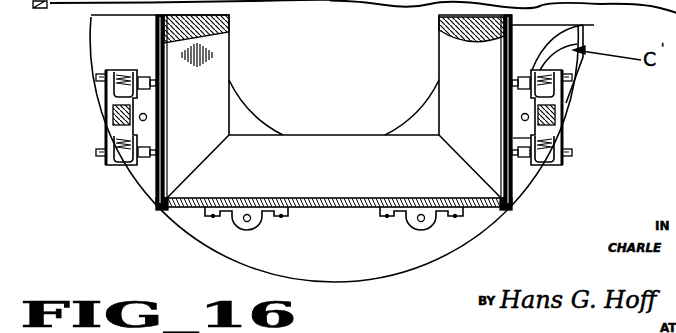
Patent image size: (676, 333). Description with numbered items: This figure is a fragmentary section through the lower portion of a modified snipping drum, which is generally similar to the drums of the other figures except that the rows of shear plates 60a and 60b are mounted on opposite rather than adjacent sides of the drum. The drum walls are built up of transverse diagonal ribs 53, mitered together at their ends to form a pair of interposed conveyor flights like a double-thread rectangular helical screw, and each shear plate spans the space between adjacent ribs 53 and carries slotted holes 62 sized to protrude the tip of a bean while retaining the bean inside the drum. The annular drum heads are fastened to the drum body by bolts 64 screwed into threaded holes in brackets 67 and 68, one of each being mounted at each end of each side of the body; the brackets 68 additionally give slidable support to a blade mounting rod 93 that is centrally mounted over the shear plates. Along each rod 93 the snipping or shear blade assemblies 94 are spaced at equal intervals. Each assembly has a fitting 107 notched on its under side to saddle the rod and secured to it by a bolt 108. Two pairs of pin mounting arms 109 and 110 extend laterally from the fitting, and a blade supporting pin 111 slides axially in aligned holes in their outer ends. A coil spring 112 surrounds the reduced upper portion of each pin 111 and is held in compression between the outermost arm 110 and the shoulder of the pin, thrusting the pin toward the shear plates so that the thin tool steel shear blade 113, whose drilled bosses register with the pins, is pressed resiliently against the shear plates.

The transverse diagonal ribs 53 is at (208, 146).
The row of shear plates 60a is at (157, 185).
The row of shear plates 60b is at (513, 185).
The slotted holes 62 is at (168, 57).
The bolts 64 is at (516, 114).
The bracket 67 is at (410, 226).
The bracket 68 is at (164, 127).
The rod 93 is at (166, 103).
The snipping or shear blade assembly 94 is at (520, 138).
The fitting 107 is at (104, 113).
The bolt 108 is at (112, 120).
The pin mounting arm 109 is at (114, 72).
The pin mounting arm 110 is at (97, 77).
The blade supporting pin 111 is at (97, 80).
The coil spring 112 is at (139, 79).
The shear blade 113 is at (157, 33).